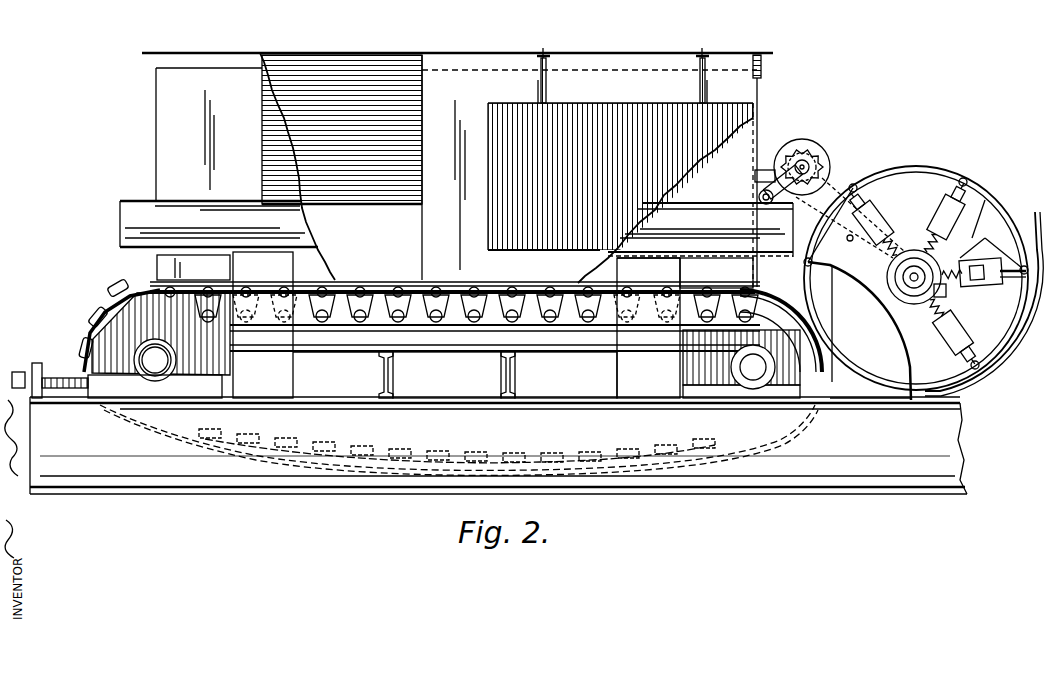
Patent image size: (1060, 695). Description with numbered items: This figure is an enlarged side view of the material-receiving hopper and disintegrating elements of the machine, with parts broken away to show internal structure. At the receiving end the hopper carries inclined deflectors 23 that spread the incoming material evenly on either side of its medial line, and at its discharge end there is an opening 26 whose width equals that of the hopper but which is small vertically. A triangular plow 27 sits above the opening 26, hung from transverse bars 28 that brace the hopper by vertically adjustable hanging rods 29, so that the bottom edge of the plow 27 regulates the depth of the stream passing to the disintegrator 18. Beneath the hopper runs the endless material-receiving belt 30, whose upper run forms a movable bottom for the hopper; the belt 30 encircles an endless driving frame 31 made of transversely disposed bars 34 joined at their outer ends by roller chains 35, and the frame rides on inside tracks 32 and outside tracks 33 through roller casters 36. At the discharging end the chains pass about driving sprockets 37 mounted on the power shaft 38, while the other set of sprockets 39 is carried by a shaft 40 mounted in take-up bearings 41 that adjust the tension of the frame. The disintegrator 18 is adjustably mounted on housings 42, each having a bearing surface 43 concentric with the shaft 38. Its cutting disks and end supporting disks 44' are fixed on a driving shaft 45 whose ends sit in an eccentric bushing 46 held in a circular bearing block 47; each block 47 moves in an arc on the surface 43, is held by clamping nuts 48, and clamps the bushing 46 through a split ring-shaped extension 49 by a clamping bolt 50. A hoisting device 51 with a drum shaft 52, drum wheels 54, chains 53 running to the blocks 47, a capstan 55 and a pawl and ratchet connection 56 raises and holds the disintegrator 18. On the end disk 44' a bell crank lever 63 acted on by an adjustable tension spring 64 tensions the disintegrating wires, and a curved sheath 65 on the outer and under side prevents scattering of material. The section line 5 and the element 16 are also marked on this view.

The top plate 16 is at (465, 62).
The deflectors 23 is at (422, 115).
The plow 27 is at (623, 104).
The transverse bars 28 is at (548, 60).
The hanging rods 29 is at (540, 90).
The opening 26 is at (757, 272).
The section line 5 is at (303, 300).
The outside tracks 33 is at (528, 292).
The transversely disposed bars 34 is at (390, 295).
The endless driving frame 31 is at (447, 375).
The inside tracks 32 is at (580, 350).
The take-up bearings 41 is at (115, 405).
The endless material-receiving belt 30 is at (630, 490).
The shaft 40 is at (158, 368).
The sprockets 39 is at (138, 290).
The roller chains 35 is at (110, 308).
The roller casters 36 is at (108, 298).
The driving sprockets 37 is at (690, 355).
The power shaft 38 is at (753, 392).
The housings 42 is at (859, 331).
The bearing surface 43 is at (908, 380).
The hoisting device 51 is at (815, 138).
The drum shaft 52 is at (812, 171).
The drum wheels 54 is at (785, 145).
The capstan 55 is at (775, 158).
The pawl and ratchet connection 56 is at (760, 191).
The chains 53 is at (824, 196).
The disintegrator 18 is at (932, 168).
The driving shaft 45 is at (898, 284).
The eccentric bushing 46 is at (888, 268).
The bell crank lever 63 is at (880, 208).
The adjustable tension spring 64 is at (930, 223).
The clamping bolt 50 is at (982, 266).
The circular bearing block 47 is at (942, 255).
The clamping nuts 48 is at (850, 258).
The split ring-shaped extension 49 is at (950, 300).
The end supporting disks 44' is at (996, 202).
The sheath 65 is at (1020, 373).